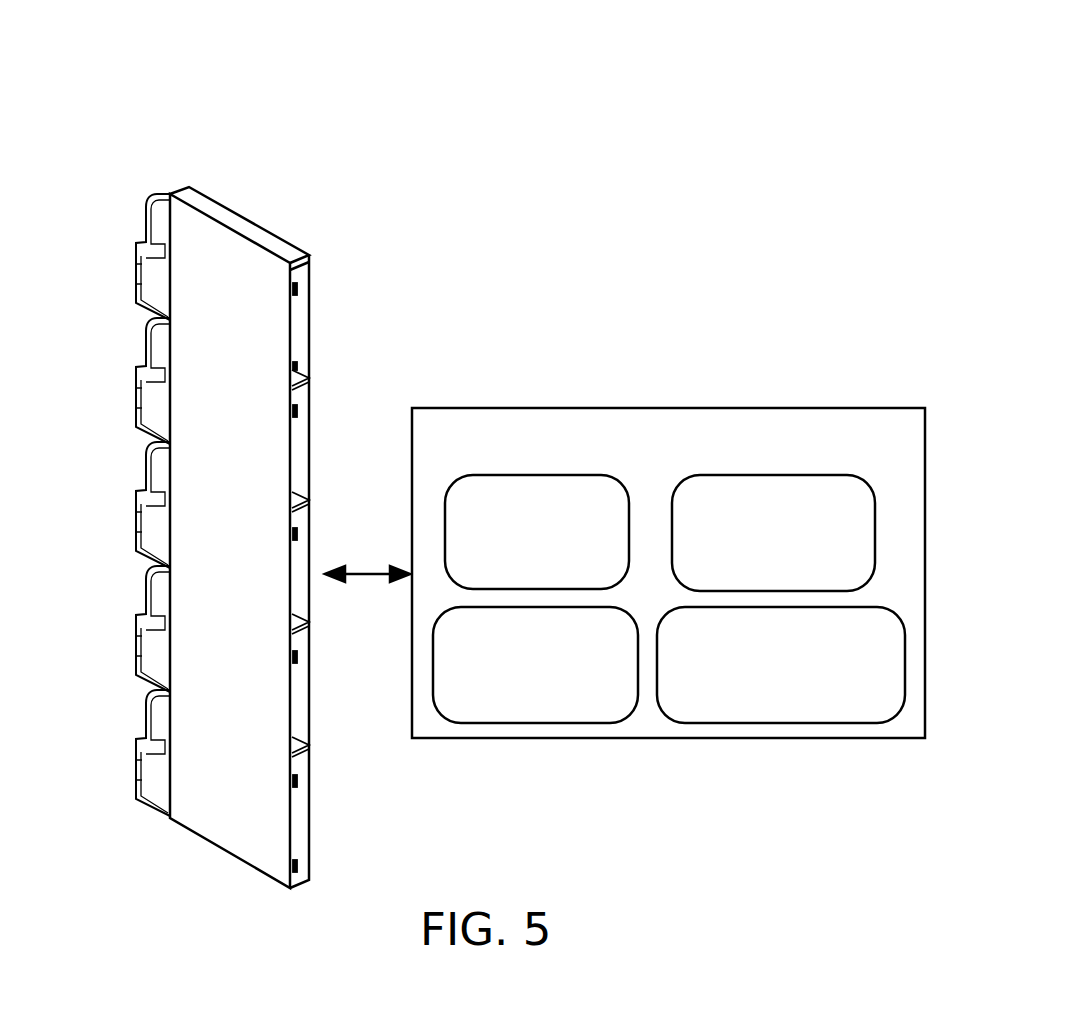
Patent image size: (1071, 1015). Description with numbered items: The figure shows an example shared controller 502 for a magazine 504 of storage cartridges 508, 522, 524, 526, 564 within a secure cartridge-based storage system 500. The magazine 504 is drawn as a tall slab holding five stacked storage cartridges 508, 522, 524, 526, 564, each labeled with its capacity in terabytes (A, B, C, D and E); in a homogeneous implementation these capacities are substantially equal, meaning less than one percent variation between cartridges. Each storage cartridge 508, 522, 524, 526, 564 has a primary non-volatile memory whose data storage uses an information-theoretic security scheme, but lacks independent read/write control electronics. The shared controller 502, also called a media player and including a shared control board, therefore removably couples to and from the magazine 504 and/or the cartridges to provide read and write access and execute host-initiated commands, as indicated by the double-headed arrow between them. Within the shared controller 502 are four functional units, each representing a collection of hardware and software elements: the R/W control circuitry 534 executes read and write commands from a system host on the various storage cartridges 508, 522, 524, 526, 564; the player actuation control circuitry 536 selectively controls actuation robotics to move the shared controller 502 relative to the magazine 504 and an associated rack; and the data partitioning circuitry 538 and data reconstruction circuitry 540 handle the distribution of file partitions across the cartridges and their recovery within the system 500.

The secure cartridge-based storage system 500 is at (647, 85).
The magazine 504 is at (292, 153).
The storage cartridge 508 is at (104, 230).
The storage cartridge 522 is at (108, 359).
The storage cartridge 524 is at (98, 485).
The storage cartridge 526 is at (100, 607).
The storage cartridge 564 is at (100, 735).
The shared controller 502 is at (668, 573).
The R/W control circuitry 534 is at (537, 532).
The player actuation control circuitry 536 is at (773, 533).
The data partitioning circuitry 538 is at (535, 665).
The data reconstruction circuitry 540 is at (781, 665).